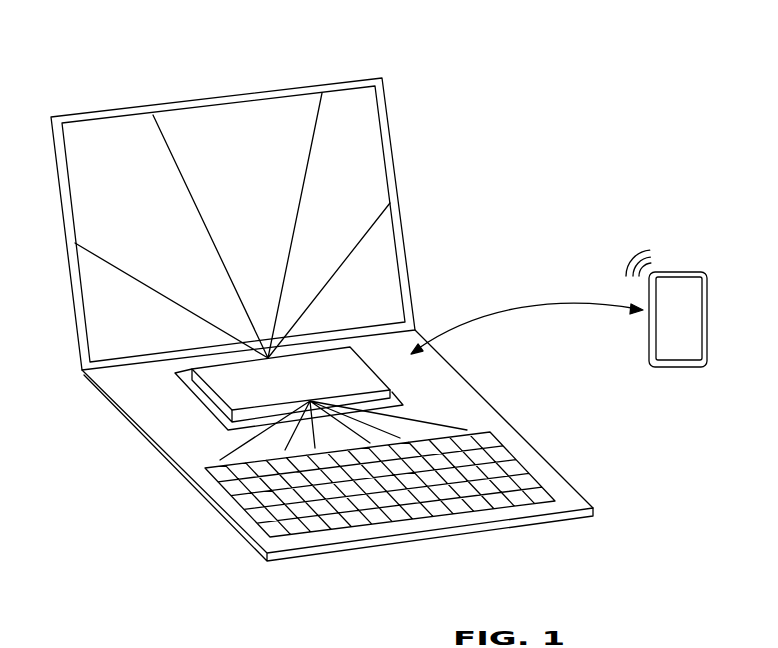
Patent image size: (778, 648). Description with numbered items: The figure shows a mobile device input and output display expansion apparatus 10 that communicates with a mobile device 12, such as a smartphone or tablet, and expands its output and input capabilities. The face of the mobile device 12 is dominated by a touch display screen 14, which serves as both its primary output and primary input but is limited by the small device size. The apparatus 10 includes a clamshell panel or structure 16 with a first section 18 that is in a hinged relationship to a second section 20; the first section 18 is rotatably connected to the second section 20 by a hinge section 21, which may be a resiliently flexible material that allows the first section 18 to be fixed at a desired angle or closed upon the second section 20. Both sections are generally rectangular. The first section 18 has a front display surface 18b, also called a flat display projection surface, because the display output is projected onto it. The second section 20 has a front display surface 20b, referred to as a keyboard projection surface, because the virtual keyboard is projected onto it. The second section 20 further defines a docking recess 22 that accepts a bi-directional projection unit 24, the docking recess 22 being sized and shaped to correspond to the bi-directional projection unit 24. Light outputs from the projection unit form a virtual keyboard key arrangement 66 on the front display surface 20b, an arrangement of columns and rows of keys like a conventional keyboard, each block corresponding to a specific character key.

The mobile device input and output display expansion apparatus 10 is at (482, 73).
The mobile device 12 is at (707, 305).
The touch display screen 14 is at (690, 327).
The clamshell panel or structure 16 is at (398, 196).
The first section 18 is at (70, 233).
The front display surface 18b is at (232, 225).
The second section 20 is at (110, 401).
The front display surface 20b is at (538, 465).
The hinge section 21 is at (415, 327).
The docking recess 22 is at (402, 406).
The bi-directional projection unit 24 is at (235, 380).
The virtual keyboard key arrangement 66 is at (430, 513).